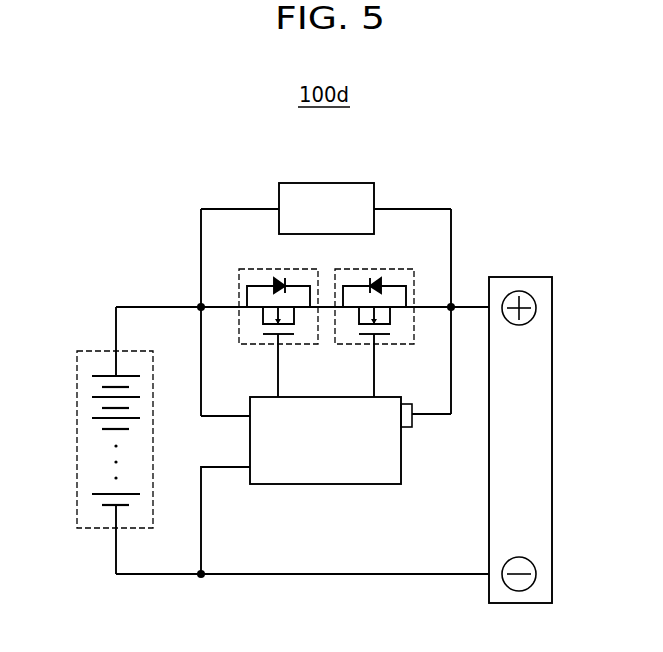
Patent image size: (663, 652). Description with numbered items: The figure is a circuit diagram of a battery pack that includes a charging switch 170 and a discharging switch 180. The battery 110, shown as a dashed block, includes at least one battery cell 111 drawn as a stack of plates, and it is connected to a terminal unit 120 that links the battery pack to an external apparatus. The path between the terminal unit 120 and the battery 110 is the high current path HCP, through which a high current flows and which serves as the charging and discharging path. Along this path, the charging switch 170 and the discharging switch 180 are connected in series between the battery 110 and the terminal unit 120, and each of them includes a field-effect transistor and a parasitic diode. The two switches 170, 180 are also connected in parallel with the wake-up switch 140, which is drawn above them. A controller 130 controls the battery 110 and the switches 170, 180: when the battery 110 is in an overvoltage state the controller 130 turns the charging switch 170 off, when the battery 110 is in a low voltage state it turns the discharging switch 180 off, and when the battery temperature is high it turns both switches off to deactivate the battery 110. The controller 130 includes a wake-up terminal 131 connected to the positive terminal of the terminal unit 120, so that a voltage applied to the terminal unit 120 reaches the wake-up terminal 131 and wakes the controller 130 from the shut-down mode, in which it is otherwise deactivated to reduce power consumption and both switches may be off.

The battery 110 is at (79, 439).
The battery cell 111 is at (102, 372).
The terminal unit 120 is at (520, 275).
The controller 130 is at (327, 485).
The wake-up terminal 131 is at (403, 430).
The wake-up switch 140 is at (330, 183).
The charging switch 170 is at (280, 270).
The discharging switch 180 is at (377, 270).
The high current path HCP is at (472, 304).